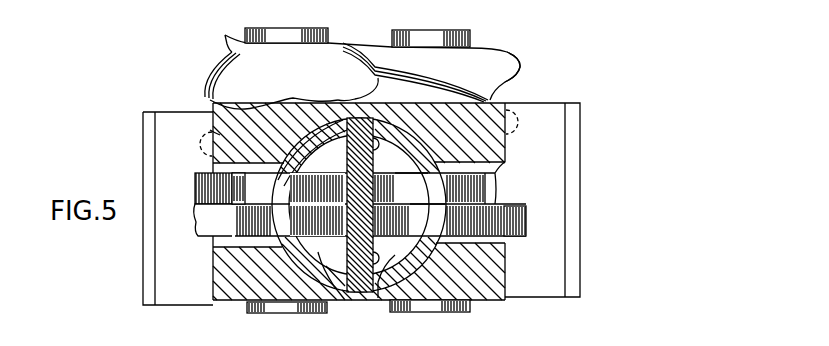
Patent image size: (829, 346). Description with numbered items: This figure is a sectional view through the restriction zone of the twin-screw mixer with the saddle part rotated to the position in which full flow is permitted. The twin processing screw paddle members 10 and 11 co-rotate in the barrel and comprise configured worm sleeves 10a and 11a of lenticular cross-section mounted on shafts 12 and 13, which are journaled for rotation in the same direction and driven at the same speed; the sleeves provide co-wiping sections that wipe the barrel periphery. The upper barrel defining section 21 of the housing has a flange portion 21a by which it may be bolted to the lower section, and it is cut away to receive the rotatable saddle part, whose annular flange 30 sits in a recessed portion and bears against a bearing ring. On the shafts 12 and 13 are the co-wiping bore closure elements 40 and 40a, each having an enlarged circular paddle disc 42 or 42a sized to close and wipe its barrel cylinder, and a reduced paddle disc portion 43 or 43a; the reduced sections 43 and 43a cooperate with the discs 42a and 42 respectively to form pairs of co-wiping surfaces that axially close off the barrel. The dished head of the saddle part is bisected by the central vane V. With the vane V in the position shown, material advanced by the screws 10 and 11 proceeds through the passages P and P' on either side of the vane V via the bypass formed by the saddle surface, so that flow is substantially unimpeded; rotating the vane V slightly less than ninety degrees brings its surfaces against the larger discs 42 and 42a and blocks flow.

The processing screw paddle member 10 is at (487, 44).
The worm sleeve 10a is at (507, 82).
The processing screw paddle member 11 is at (228, 53).
The worm sleeve 11a is at (215, 103).
The shaft 12 is at (249, 36).
The shaft 13 is at (392, 40).
The upper barrel defining section 21 is at (442, 110).
The flange portion 21a is at (573, 132).
The annular flange 30 is at (350, 300).
The co-wiping bore closure element 40 is at (221, 212).
The co-wiping bore closure element 40a is at (490, 198).
The enlarged circular paddle disc 42 is at (195, 190).
The enlarged circular paddle disc 42a is at (527, 218).
The reduced paddle disc portion 43 is at (243, 218).
The reduced paddle disc portion 43a is at (503, 167).
The central vane V is at (347, 158).
The passage P is at (296, 294).
The passage P' is at (416, 292).